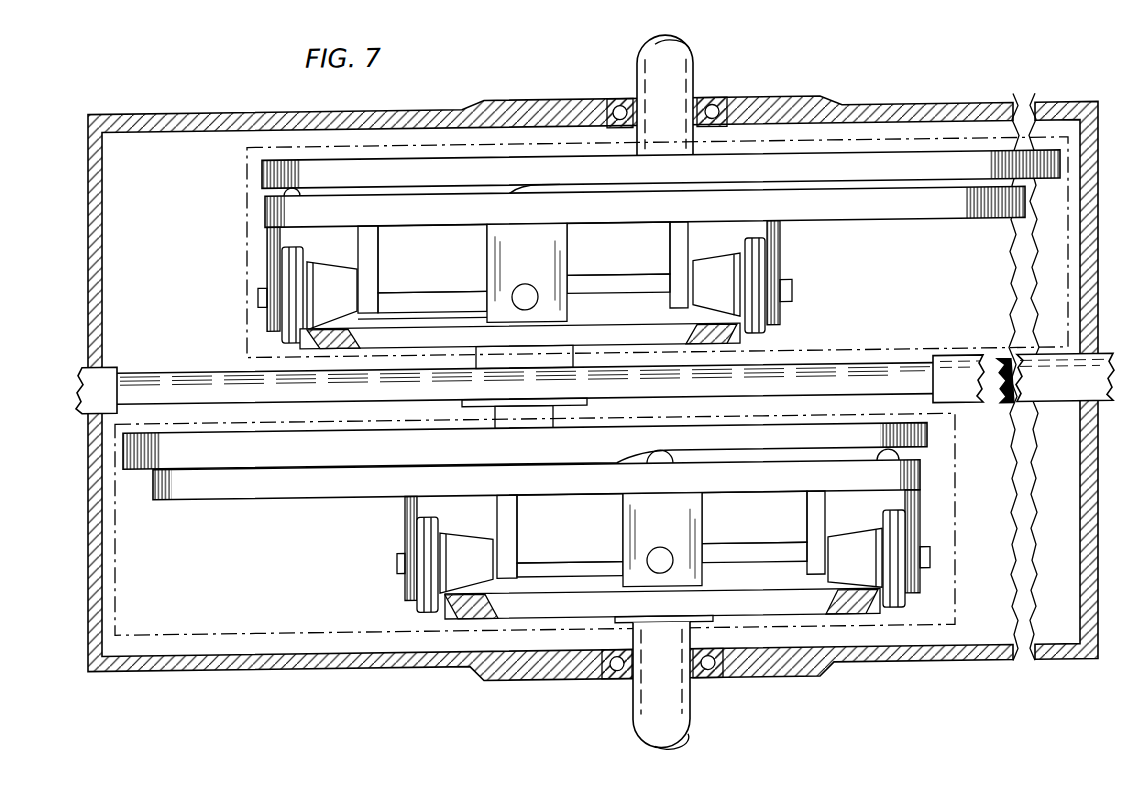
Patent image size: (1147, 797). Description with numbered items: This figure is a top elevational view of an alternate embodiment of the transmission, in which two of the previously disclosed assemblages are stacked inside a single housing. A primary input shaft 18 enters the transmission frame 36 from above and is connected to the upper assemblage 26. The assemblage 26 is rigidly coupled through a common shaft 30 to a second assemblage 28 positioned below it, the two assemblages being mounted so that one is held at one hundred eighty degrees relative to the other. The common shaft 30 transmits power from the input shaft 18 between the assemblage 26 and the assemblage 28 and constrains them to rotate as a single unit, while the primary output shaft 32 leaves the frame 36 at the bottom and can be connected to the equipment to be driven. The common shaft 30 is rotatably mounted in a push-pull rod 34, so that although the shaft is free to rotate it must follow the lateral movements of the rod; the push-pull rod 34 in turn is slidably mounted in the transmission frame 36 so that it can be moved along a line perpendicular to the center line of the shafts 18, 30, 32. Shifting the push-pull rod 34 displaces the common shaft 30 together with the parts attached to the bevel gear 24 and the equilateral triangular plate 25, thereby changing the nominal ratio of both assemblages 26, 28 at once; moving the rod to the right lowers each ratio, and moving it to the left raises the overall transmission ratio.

The primary input shaft 18 is at (697, 83).
The transmission frame 36 is at (884, 106).
The assemblage 26 is at (1073, 189).
The common shaft 30 is at (568, 250).
The bevel gear 24 is at (520, 337).
The push-pull rod 34 is at (878, 381).
The equilateral triangular plate 25 is at (270, 483).
The second assemblage 28 is at (958, 612).
The primary output shaft 32 is at (695, 719).